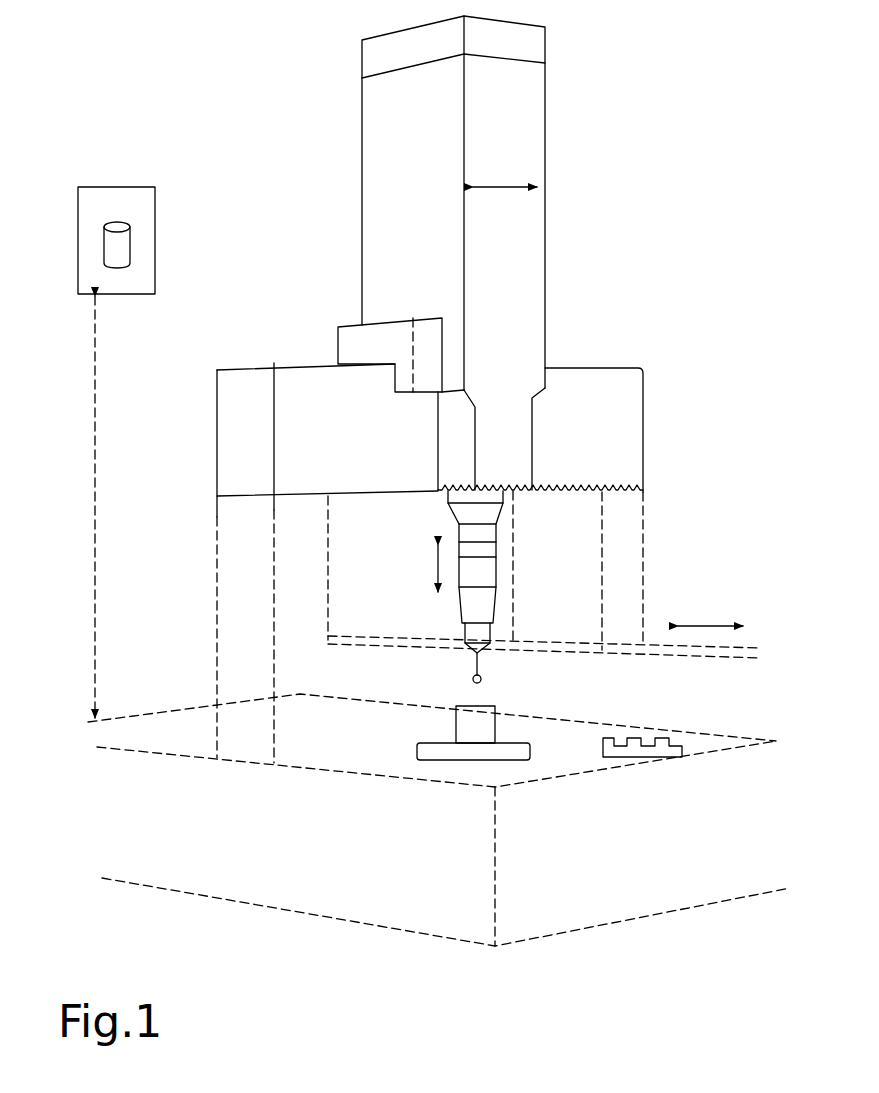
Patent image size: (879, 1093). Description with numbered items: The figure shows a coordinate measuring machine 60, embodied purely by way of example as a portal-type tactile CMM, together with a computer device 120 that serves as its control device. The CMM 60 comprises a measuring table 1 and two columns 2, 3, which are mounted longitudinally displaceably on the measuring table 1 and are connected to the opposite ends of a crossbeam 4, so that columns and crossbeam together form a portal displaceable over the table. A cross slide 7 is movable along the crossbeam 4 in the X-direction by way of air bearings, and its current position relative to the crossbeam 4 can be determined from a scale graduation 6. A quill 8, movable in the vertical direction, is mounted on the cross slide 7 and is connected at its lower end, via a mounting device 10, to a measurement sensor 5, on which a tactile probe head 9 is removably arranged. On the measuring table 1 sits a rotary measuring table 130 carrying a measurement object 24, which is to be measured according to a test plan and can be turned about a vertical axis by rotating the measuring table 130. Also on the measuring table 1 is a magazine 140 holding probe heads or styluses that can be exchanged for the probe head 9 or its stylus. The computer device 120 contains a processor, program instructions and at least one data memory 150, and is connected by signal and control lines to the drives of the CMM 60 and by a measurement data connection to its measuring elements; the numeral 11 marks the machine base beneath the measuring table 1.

The measuring table 1 is at (139, 717).
The column 2 is at (643, 575).
The column 3 is at (217, 593).
The crossbeam 4 is at (242, 367).
The measurement sensor 5 is at (457, 587).
The scale graduation 6 is at (578, 492).
The cross slide 7 is at (362, 138).
The quill 8 is at (492, 495).
The probe head 9 is at (482, 633).
The mounting device 10 is at (458, 542).
The machine base 11 is at (197, 917).
The measurement object 24 is at (510, 733).
The coordinate measuring machine 60 is at (677, 265).
The computer device 120 is at (157, 297).
The measuring table 130 is at (440, 762).
The magazine 140 is at (628, 760).
The data memory 150 is at (115, 222).